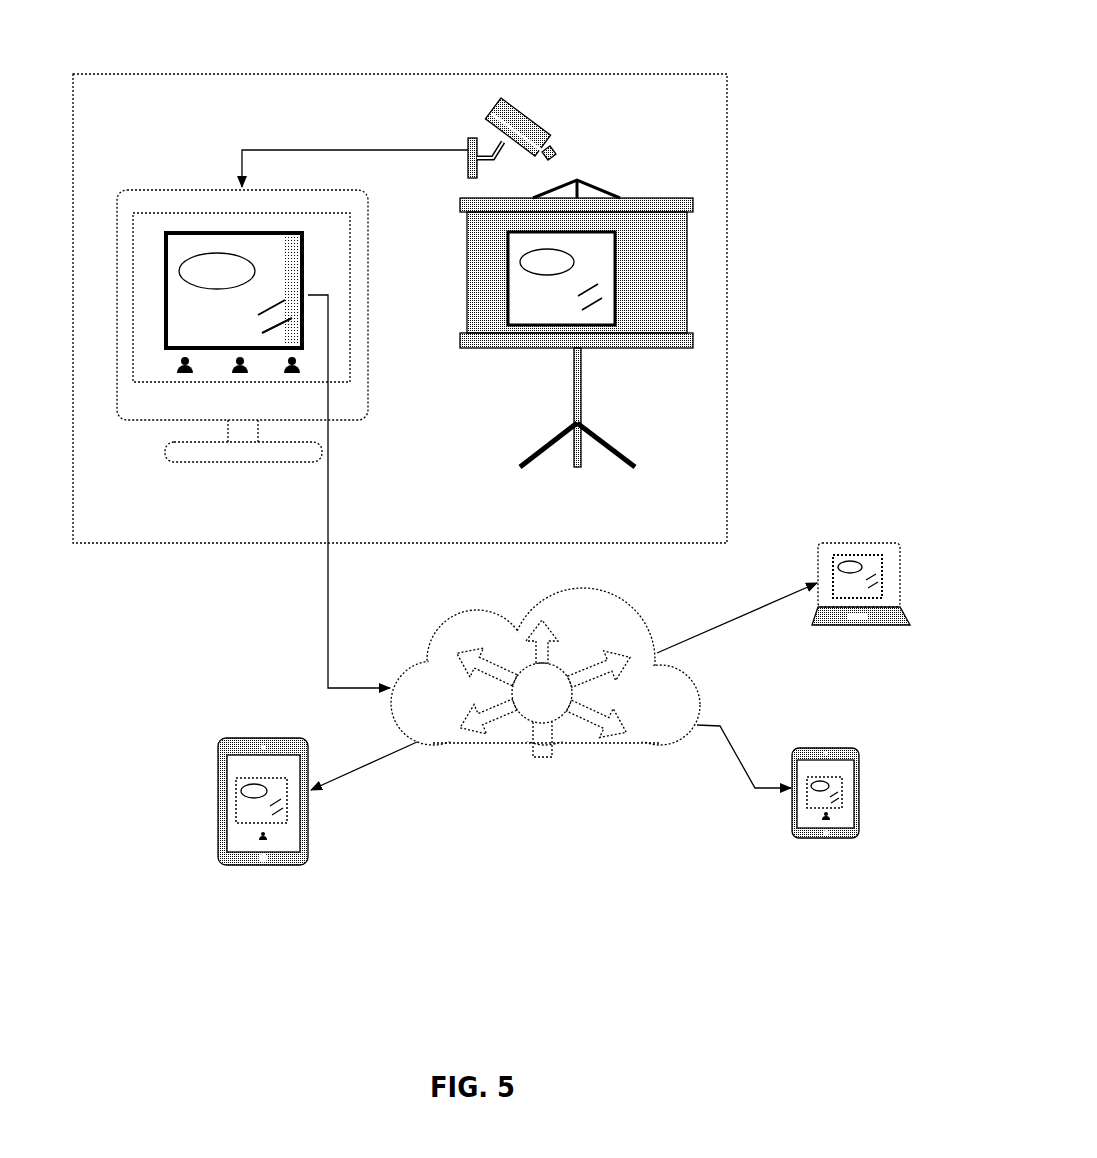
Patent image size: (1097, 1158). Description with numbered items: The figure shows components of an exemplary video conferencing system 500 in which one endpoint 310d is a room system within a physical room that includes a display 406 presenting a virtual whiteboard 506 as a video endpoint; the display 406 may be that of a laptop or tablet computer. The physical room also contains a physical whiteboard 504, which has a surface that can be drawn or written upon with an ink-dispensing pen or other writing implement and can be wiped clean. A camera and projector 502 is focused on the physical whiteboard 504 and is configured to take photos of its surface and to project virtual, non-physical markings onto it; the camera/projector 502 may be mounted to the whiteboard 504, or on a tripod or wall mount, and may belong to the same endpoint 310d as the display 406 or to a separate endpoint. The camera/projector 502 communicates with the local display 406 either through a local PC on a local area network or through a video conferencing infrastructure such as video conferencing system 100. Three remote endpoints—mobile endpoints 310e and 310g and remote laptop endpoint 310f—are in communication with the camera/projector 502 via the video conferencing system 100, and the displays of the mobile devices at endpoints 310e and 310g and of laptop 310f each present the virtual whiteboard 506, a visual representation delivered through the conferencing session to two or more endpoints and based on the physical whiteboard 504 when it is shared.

The video conferencing system 500 is at (797, 70).
The video conferencing system 100 is at (532, 829).
The endpoint 310d is at (125, 529).
The mobile endpoint 310e is at (240, 917).
The remote laptop endpoint 310f is at (877, 657).
The mobile endpoint 310g is at (849, 896).
The display 406 is at (227, 511).
The camera and projector 502 is at (442, 107).
The physical whiteboard 504 is at (534, 396).
The virtual whiteboard 506 is at (149, 254).